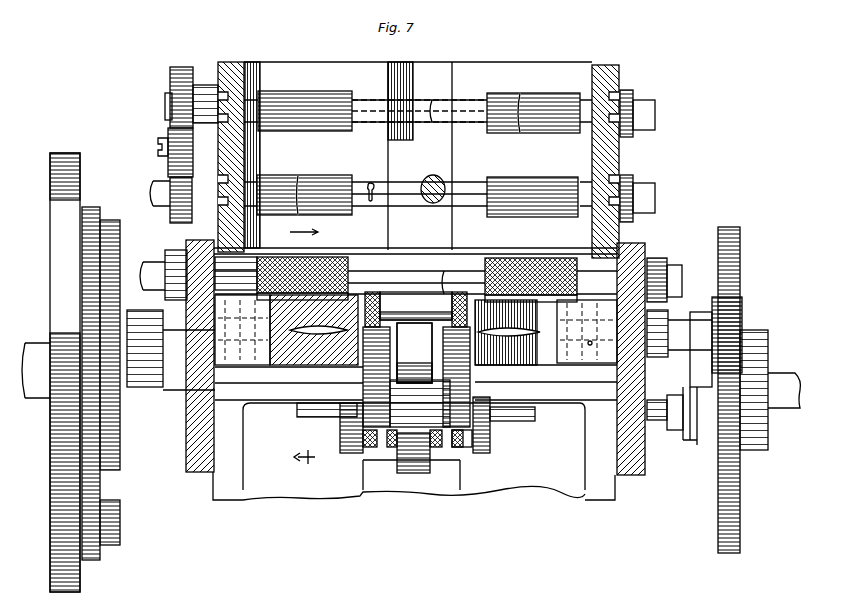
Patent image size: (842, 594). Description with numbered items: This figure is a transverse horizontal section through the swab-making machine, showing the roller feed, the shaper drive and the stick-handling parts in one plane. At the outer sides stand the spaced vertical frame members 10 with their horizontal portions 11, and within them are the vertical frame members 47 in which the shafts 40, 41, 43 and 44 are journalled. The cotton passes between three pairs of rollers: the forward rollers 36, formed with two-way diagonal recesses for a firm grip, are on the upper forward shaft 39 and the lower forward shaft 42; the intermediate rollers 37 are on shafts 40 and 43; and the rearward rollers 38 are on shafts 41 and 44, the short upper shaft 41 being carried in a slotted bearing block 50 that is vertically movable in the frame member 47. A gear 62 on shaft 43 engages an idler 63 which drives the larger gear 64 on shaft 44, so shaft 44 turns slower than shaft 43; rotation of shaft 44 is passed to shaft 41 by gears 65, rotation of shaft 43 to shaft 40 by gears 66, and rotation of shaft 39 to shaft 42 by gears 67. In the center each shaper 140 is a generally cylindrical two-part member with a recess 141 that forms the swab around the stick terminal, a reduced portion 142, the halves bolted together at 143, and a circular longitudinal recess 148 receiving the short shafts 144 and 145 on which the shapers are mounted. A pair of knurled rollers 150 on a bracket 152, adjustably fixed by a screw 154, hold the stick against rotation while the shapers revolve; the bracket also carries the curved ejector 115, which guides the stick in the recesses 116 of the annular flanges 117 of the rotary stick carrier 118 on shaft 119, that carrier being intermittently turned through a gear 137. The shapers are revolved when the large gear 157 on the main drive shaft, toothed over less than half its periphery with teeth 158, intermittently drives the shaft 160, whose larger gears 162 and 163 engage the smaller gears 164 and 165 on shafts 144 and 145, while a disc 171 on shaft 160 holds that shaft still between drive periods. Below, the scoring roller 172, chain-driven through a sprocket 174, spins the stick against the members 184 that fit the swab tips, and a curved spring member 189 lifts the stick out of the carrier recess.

The vertical frame member 10 is at (200, 472).
The horizontal portion 11 is at (293, 345).
The forward roller 36 is at (330, 257).
The intermediate roller 37 is at (340, 177).
The rearward roller 38 is at (336, 92).
The upper forward shaft 39 is at (158, 262).
The upper intermediate shaft 40 is at (374, 183).
The upper rearward shaft 41 is at (371, 100).
The lower forward shaft 42 is at (416, 259).
The lower intermediate shaft 43 is at (153, 188).
The lower rearward shaft 44 is at (165, 105).
The vertical frame member 47 is at (232, 62).
The slotted bearing block 50 is at (250, 95).
The gear 62 is at (170, 210).
The idler 63 is at (168, 133).
The gear 64 is at (183, 67).
The gears 65 is at (628, 95).
The gears 66 is at (628, 178).
The gears 67 is at (656, 260).
The ejector 115 is at (414, 353).
The recess 116 is at (490, 402).
The annular flange 117 is at (490, 418).
The rotary stick carrier 118 is at (385, 430).
The shaft 119 is at (280, 403).
The gear 137 is at (675, 430).
The shaper 140 is at (360, 297).
The recess 141 is at (522, 332).
The reduced portion 142 is at (440, 330).
The bolt 143 is at (585, 300).
The short shaft 144 is at (162, 345).
The short shaft 145 is at (677, 327).
The circular longitudinal recess 148 is at (590, 345).
The knurled roller 150 is at (458, 300).
The bracket 152 is at (416, 306).
The screw 154 is at (436, 176).
The large gear 157 is at (55, 278).
The teeth 158 is at (64, 153).
The shaft 160 is at (778, 373).
The larger gear 162 is at (117, 545).
The larger gear 163 is at (740, 490).
The gear 164 is at (125, 290).
The gear 165 is at (744, 315).
The disc 171 is at (100, 472).
The scoring roller 172 is at (462, 440).
The sprocket 174 is at (690, 445).
The member 184 is at (292, 410).
The curved spring member 189 is at (418, 465).